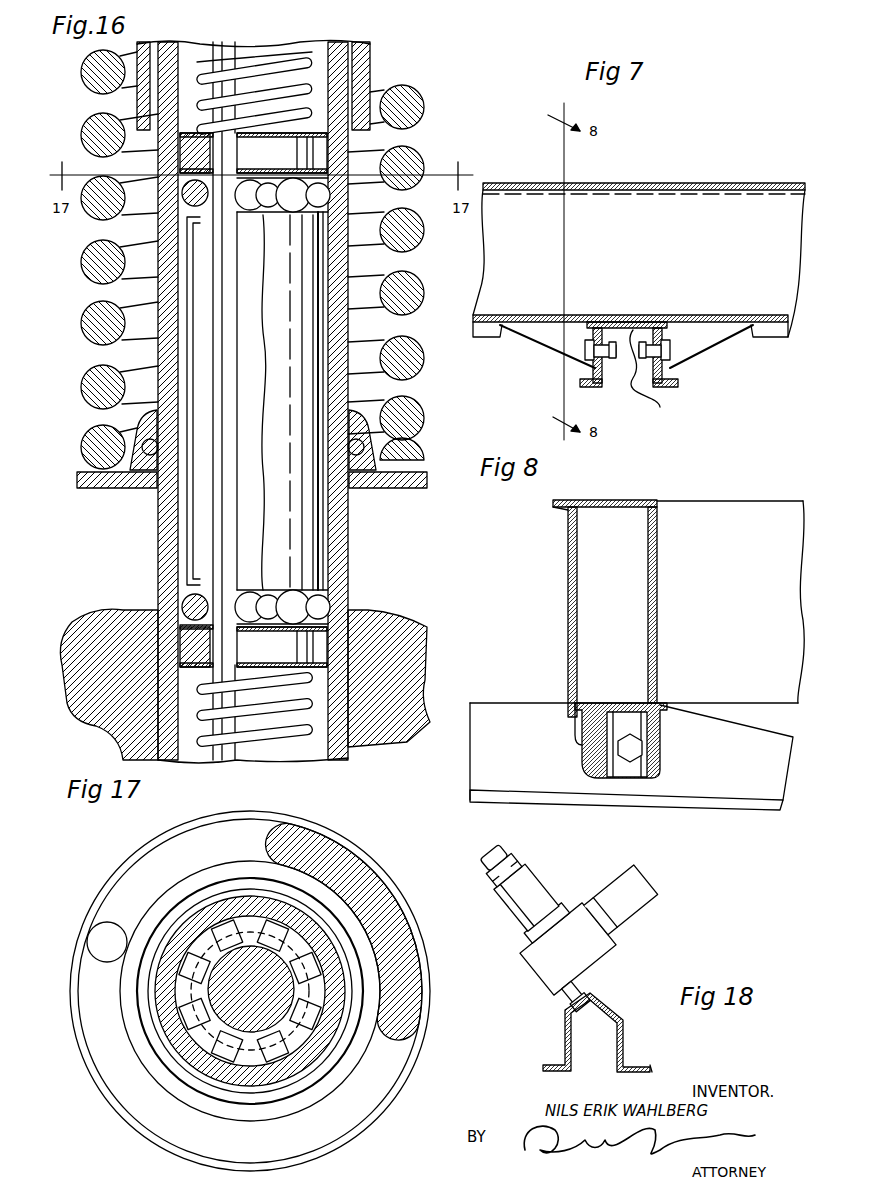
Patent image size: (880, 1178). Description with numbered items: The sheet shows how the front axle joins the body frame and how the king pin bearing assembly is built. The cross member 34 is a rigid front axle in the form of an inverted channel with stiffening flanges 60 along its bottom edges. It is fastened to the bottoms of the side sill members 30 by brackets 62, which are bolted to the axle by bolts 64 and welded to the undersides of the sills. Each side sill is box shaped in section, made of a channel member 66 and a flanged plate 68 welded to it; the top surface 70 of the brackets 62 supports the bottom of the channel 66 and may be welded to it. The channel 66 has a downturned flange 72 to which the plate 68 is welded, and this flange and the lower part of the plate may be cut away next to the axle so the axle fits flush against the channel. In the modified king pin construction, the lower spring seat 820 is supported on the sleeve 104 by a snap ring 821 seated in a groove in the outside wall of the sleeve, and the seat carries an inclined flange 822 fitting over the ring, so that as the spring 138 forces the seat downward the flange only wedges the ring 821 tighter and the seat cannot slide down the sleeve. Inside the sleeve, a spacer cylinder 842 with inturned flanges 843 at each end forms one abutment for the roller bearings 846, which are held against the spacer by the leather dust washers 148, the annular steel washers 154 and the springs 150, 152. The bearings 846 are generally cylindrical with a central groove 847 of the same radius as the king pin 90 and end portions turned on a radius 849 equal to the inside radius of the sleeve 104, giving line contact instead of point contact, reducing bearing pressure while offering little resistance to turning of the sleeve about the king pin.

In FIG. 16, the sleeve 104 is at (345, 543).
In FIG. 17, the sleeve 104 is at (313, 923).
In FIG. 16, the leather washers 148 is at (352, 147).
In FIG. 16, the upper spring 150 is at (307, 67).
In FIG. 16, the lower spring 152 is at (345, 752).
In FIG. 16, the annular steel washers 154 is at (325, 160).
In FIG. 16, the inturned flanges 843 is at (187, 217).
In FIG. 16, the spacer cylinder 842 is at (187, 283).
In FIG. 16, the roller bearings 846 is at (333, 192).
In FIG. 17, the roller bearings 846 is at (320, 993).
In FIG. 17, the central groove 847 is at (288, 1030).
In FIG. 17, the radius 849 is at (350, 852).
In FIG. 16, the spring 138 is at (95, 325).
In FIG. 17, the spring 138 is at (382, 1067).
In FIG. 16, the inclined flange 822 is at (137, 423).
In FIG. 17, the inclined flange 822 is at (323, 1090).
In FIG. 16, the snap ring 821 is at (142, 490).
In FIG. 16, the lower spring seat 820 is at (395, 485).
In FIG. 17, the king pin 90 is at (251, 989).
In FIG. 7, the channel member 66 is at (788, 183).
In FIG. 8, the channel member 66 is at (675, 520).
In FIG. 7, the flanged plate 68 is at (708, 185).
In FIG. 8, the flanged plate 68 is at (568, 562).
In FIG. 7, the top surface 70 is at (545, 312).
In FIG. 8, the top surface 70 is at (588, 703).
In FIG. 7, the downturned flange 72 is at (490, 340).
In FIG. 8, the downturned flange 72 is at (570, 730).
In FIG. 7, the brackets 62 is at (555, 342).
In FIG. 8, the brackets 62 is at (660, 740).
In FIG. 7, the stiffening flanges 60 is at (580, 386).
In FIG. 8, the stiffening flanges 60 is at (750, 803).
In FIG. 18, the stiffening flanges 60 is at (640, 1060).
In FIG. 7, the bolts 64 is at (609, 360).
In FIG. 8, the bolts 64 is at (645, 760).
In FIG. 7, the cross member 34 is at (662, 375).
In FIG. 8, the cross member 34 is at (510, 715).
In FIG. 18, the cross member 34 is at (565, 1030).
In FIG. 8, the side sill members 30 is at (600, 505).